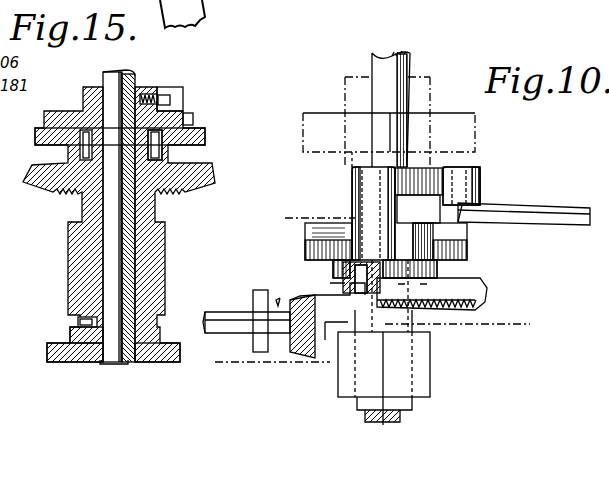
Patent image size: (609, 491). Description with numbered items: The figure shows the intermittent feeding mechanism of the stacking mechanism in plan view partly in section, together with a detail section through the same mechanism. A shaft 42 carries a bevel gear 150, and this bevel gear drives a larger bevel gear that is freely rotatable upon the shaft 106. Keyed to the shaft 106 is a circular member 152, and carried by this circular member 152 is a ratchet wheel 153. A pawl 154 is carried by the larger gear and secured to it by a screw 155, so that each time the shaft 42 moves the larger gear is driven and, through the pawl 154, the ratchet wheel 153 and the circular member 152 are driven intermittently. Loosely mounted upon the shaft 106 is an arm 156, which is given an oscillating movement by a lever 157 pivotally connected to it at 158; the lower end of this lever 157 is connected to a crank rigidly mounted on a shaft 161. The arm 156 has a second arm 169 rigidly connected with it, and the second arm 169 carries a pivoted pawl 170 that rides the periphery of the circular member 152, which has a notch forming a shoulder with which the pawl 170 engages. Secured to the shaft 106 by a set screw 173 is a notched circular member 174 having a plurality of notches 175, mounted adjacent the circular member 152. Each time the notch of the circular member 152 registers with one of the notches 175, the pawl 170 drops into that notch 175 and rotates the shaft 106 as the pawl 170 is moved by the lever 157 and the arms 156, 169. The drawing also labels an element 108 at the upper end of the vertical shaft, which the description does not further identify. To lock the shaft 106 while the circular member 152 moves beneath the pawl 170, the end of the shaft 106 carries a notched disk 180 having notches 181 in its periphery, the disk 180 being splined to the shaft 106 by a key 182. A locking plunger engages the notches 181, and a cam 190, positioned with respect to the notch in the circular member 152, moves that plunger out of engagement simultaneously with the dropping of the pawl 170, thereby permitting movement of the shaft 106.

In FIG. 15, the shaft 106 is at (136, 73).
In FIG. 10, the shaft 108 is at (396, 70).
In FIG. 15, the circular member 152 is at (206, 138).
In FIG. 10, the circular member 152 is at (470, 249).
In FIG. 15, the ratchet wheel 153 is at (166, 160).
In FIG. 10, the ratchet wheel 153 is at (437, 271).
In FIG. 10, the pawl 154 is at (343, 271).
In FIG. 10, the screw 155 is at (345, 312).
In FIG. 10, the arm 156 is at (446, 172).
In FIG. 10, the lever 157 is at (540, 209).
In FIG. 10, the pivotal connection 158 is at (483, 187).
In FIG. 10, the shaft 161 is at (478, 289).
In FIG. 10, the second arm 169 is at (352, 188).
In FIG. 10, the pawl 170 is at (419, 205).
In FIG. 15, the set screw 173 is at (171, 100).
In FIG. 15, the notched circular member 174 is at (185, 118).
In FIG. 15, the notches 175 is at (194, 121).
In FIG. 15, the notched disk 180 is at (72, 363).
In FIG. 15, the notches 181 is at (170, 363).
In FIG. 15, the key 182 is at (96, 364).
In FIG. 15, the cam 190 is at (70, 336).
In FIG. 10, the bevel gear 150 is at (295, 357).
In FIG. 10, the shaft 42 is at (233, 310).